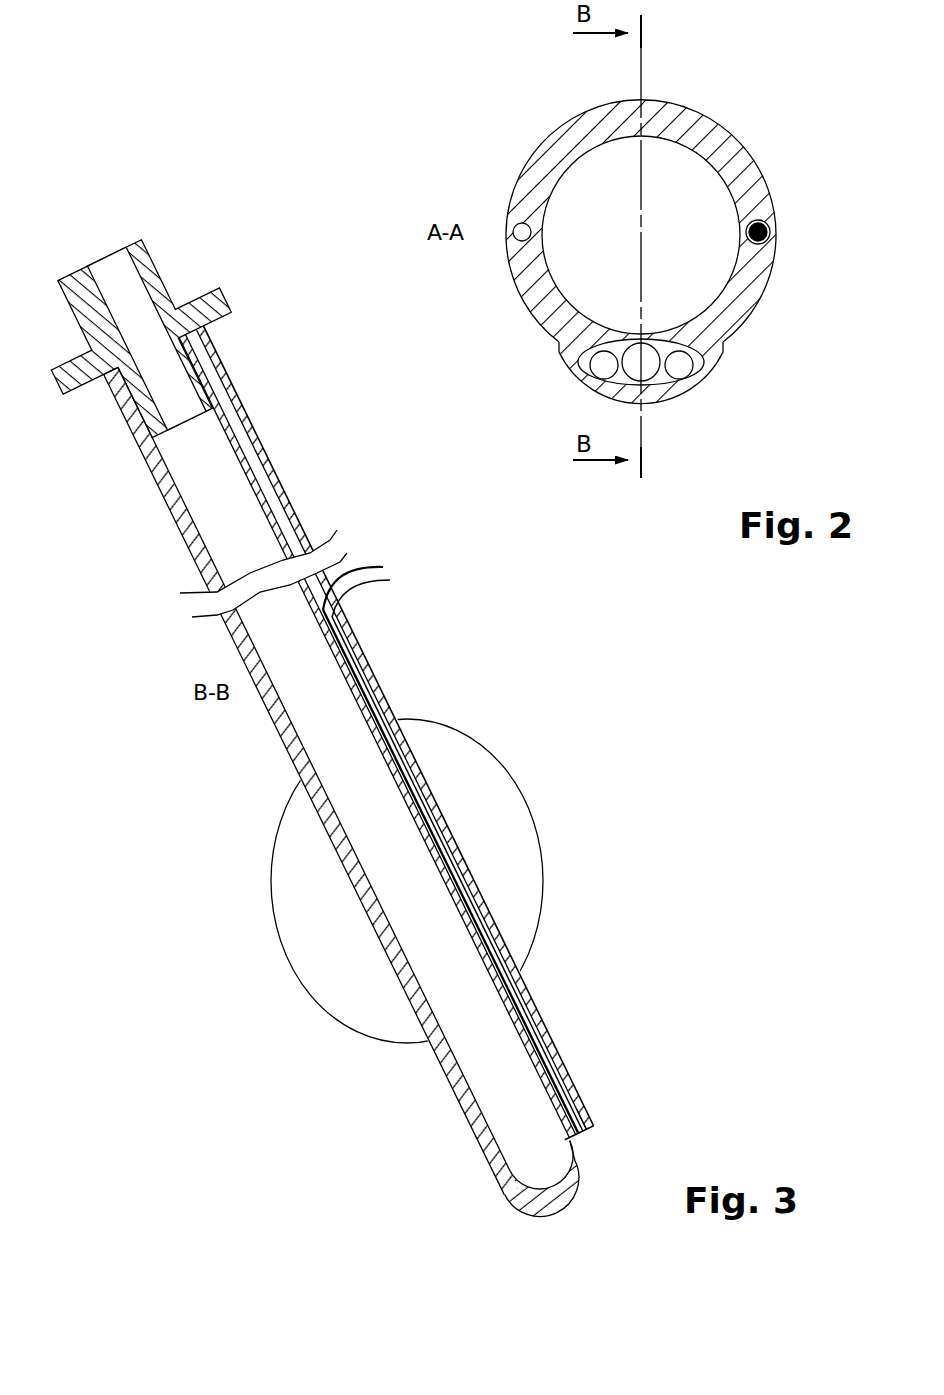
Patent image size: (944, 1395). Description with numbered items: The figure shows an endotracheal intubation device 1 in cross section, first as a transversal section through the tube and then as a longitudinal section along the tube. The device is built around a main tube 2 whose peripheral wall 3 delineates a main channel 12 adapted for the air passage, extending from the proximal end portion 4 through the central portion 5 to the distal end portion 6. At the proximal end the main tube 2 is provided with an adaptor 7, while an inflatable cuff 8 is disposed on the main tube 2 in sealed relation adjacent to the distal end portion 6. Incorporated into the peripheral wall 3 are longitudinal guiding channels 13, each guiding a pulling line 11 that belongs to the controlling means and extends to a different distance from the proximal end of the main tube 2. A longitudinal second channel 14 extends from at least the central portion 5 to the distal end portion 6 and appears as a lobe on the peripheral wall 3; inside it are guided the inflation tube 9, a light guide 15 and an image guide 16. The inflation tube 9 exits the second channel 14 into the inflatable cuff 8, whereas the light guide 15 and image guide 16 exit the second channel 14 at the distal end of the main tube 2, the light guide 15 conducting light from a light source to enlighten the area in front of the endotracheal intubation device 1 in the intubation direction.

In FIG. 2, the endotracheal intubation device 1 is at (428, 181).
In FIG. 3, the endotracheal intubation device 1 is at (518, 646).
In FIG. 2, the main tube 2 is at (503, 297).
In FIG. 3, the main tube 2 is at (178, 556).
In FIG. 2, the peripheral wall 3 is at (748, 290).
In FIG. 3, the peripheral wall 3 is at (453, 1092).
In FIG. 3, the proximal end portion 4 is at (106, 418).
In FIG. 2, the central portion 5 is at (763, 123).
In FIG. 3, the central portion 5 is at (200, 640).
In FIG. 3, the distal end portion 6 is at (498, 1207).
In FIG. 3, the adaptor 7 is at (153, 286).
In FIG. 3, the cuff 8 is at (460, 778).
In FIG. 2, the inflation tube 9 is at (630, 375).
In FIG. 3, the inflation tube 9 is at (456, 865).
In FIG. 2, the pulling lines 11 is at (767, 216).
In FIG. 2, the main channel 12 is at (590, 182).
In FIG. 3, the main channel 12 is at (523, 1165).
In FIG. 2, the longitudinal guiding channel 13 is at (512, 226).
In FIG. 2, the longitudinal second channel 14 is at (667, 387).
In FIG. 3, the longitudinal second channel 14 is at (545, 1035).
In FIG. 2, the light guide 15 is at (600, 365).
In FIG. 3, the light guide 15 is at (585, 1127).
In FIG. 2, the image guide 16 is at (683, 365).
In FIG. 3, the image guide 16 is at (578, 1138).